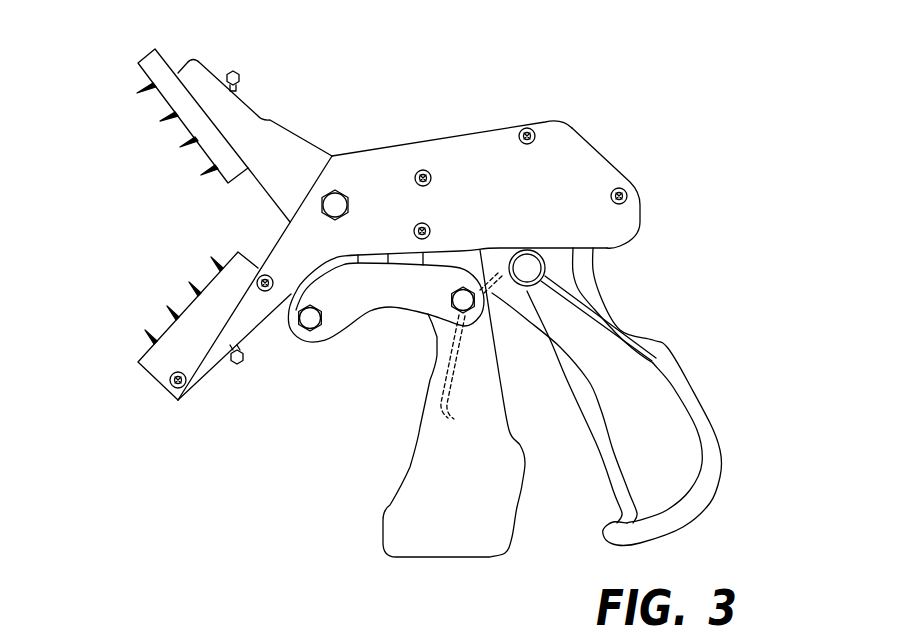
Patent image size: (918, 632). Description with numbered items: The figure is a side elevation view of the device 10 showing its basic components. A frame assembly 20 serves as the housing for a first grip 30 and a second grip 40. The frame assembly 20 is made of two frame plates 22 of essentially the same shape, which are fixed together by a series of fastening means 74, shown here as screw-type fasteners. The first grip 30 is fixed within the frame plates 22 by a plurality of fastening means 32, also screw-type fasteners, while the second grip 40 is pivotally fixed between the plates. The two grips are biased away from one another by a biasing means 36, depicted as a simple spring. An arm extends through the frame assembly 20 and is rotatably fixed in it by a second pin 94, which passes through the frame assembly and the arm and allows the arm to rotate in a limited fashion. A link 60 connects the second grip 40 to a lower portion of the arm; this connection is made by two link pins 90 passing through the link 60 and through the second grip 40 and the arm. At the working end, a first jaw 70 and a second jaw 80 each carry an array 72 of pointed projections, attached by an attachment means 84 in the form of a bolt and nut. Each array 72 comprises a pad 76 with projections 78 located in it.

The tool 10 is at (582, 58).
The frame assembly 20 is at (604, 143).
The frame plate 22 is at (607, 217).
The first grip 30 is at (725, 438).
The fastening means 32 is at (530, 127).
The biasing means 36 is at (577, 292).
The second grip 40 is at (385, 535).
The link 60 is at (352, 330).
The first jaw 70 is at (197, 377).
The array of pointed projections 72 is at (138, 80).
The fastening means 74 is at (424, 170).
The pad 76 is at (228, 178).
The projections 78 is at (168, 112).
The second jaw 80 is at (200, 70).
The attachment means 84 is at (241, 74).
The link pin 90 is at (458, 310).
The second pin 94 is at (336, 190).